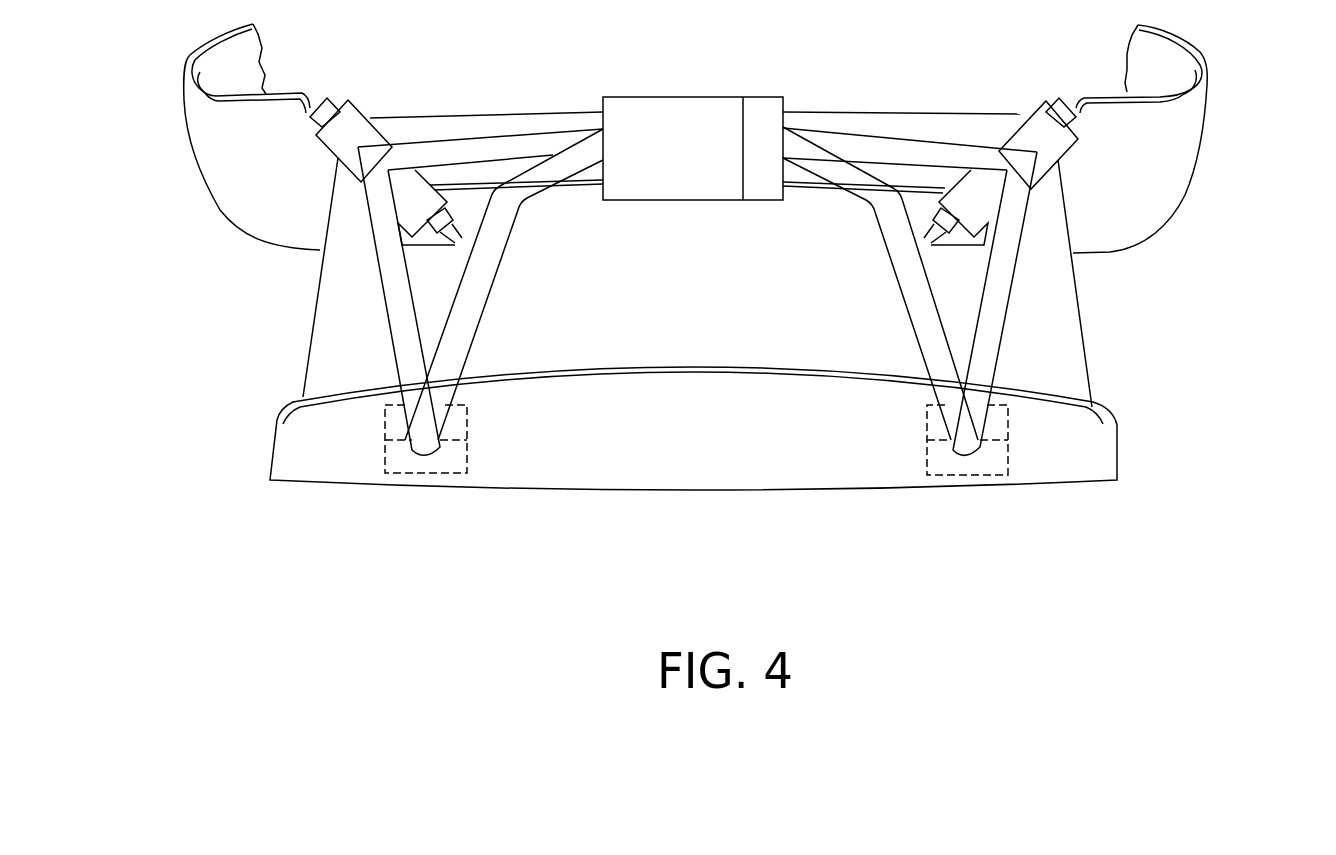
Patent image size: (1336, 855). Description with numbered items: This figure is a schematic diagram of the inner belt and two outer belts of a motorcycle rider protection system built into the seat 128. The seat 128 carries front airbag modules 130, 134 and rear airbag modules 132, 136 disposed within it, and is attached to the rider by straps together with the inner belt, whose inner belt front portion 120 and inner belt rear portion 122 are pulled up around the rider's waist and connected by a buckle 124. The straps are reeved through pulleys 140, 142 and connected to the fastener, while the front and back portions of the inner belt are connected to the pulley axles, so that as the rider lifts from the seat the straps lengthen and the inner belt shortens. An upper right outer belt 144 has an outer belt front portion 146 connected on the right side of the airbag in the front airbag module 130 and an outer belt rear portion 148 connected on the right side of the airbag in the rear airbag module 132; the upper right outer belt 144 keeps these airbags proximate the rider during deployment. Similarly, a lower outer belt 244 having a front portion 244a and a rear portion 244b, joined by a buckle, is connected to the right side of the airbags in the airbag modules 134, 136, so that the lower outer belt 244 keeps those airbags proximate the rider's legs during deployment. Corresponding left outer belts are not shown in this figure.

The inner belt front portion 120 is at (1178, 177).
The inner belt rear portion 122 is at (217, 168).
The buckle 124 is at (690, 108).
The seat 128 is at (717, 476).
The front airbag module 130 is at (1007, 425).
The rear airbag module 132 is at (393, 422).
The front airbag module 134 is at (993, 453).
The rear airbag module 136 is at (387, 450).
The pulley 140 is at (385, 152).
The pulley 142 is at (1023, 143).
The upper right outer belt 144 is at (840, 132).
The outer belt front portion 146 is at (1002, 275).
The outer belt rear portion 148 is at (393, 272).
The lower outer belt 244 is at (691, 283).
The front portion 244a is at (910, 285).
The rear portion 244b is at (477, 293).